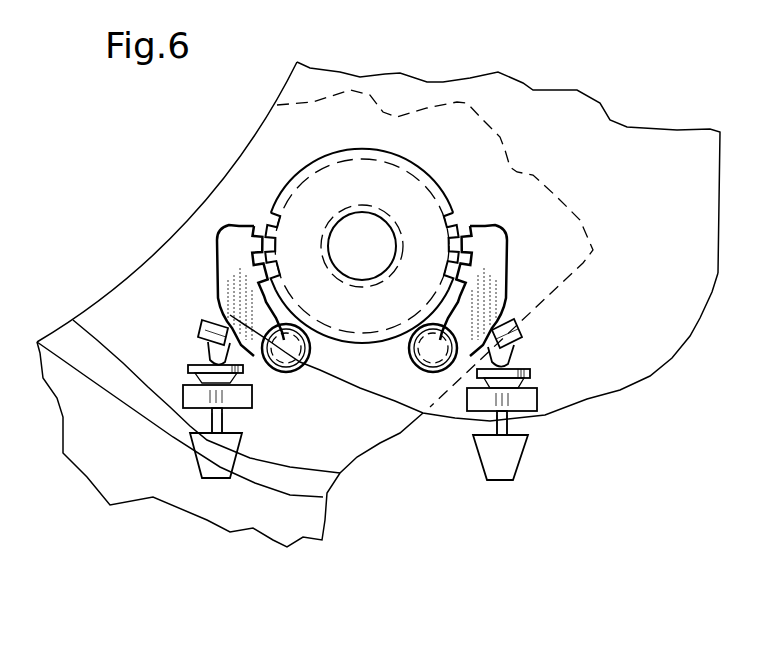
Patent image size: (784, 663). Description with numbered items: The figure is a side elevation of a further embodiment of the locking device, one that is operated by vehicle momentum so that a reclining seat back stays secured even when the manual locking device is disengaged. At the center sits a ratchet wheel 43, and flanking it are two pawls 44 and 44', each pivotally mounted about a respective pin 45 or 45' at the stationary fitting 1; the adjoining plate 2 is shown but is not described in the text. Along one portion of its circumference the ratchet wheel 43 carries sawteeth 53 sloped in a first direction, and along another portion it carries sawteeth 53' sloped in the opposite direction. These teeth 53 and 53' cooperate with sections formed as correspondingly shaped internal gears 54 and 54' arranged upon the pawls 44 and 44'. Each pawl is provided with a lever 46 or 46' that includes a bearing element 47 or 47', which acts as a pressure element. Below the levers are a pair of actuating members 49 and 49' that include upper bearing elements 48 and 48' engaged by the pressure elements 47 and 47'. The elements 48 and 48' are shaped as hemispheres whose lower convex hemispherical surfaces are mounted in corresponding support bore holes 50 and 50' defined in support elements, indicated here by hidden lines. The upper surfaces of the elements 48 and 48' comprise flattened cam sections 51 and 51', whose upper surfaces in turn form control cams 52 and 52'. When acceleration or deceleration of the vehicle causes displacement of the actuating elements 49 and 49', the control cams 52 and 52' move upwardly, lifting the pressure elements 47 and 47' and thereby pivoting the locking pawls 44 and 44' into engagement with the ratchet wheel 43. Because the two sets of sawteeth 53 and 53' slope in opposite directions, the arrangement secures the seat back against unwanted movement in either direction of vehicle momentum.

The stationary fitting 1 is at (303, 532).
The second plate 2 is at (712, 237).
The ratchet wheel 43 is at (423, 210).
The pawl 44 is at (493, 291).
The pawl 44' is at (219, 279).
The pin 45 is at (421, 361).
The pin 45' is at (296, 365).
The lever 46 is at (530, 323).
The lever 46' is at (205, 313).
The bearing element 47 is at (528, 345).
The bearing element 47' is at (186, 345).
The upper bearing element 48 is at (520, 401).
The upper bearing element 48' is at (240, 404).
The actuating member 49 is at (517, 463).
The actuating member 49' is at (235, 478).
The support bore hole 50 is at (548, 433).
The support bore hole 50' is at (176, 444).
The flattened cam section 51 is at (536, 367).
The flattened cam section 51' is at (193, 373).
The control cam 52 is at (542, 374).
The control cam 52' is at (190, 355).
The sawteeth 53 is at (480, 230).
The sawteeth 53' is at (275, 214).
The internal gear 54 is at (498, 219).
The internal gear 54' is at (227, 183).